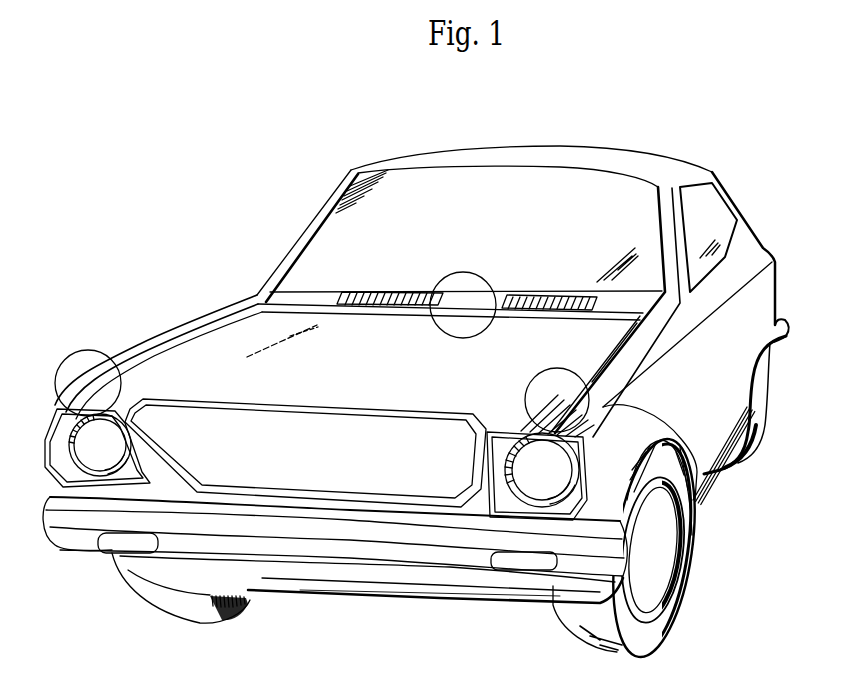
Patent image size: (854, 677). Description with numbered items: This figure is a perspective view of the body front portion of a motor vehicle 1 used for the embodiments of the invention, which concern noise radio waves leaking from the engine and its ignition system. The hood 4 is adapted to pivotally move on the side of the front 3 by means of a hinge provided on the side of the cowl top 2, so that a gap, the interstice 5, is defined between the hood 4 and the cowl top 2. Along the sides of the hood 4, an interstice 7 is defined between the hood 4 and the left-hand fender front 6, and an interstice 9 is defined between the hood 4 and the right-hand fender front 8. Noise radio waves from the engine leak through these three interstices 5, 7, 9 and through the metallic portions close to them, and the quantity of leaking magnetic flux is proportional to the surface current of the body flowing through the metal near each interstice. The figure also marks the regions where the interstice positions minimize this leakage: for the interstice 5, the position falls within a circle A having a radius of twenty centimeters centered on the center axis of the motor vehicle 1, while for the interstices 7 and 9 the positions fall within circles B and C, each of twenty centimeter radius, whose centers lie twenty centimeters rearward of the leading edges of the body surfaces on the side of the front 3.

The motor vehicle 1 is at (536, 156).
The cowl top 2 is at (307, 300).
The front 3 is at (306, 427).
The hood 4 is at (171, 358).
The interstice 5 is at (376, 291).
The left-hand fender front 6 is at (700, 482).
The interstice 7 is at (602, 355).
The right-hand fender front 8 is at (192, 318).
The interstice 9 is at (236, 312).
The circle A is at (491, 283).
The circle B is at (531, 383).
The circle C is at (97, 350).